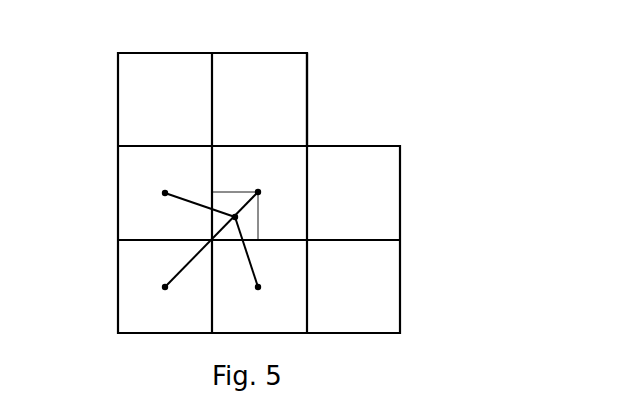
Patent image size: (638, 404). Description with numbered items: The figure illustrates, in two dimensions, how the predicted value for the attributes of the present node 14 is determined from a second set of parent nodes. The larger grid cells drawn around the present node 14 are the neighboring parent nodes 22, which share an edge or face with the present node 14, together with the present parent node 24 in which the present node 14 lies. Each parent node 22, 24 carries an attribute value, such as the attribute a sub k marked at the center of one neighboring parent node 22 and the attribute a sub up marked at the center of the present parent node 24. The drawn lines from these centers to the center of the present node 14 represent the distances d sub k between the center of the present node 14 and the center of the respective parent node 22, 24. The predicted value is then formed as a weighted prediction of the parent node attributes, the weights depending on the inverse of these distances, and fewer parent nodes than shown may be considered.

The present node 14 is at (253, 217).
The neighboring parent nodes 22 is at (133, 205).
The present parent node 24 is at (282, 168).